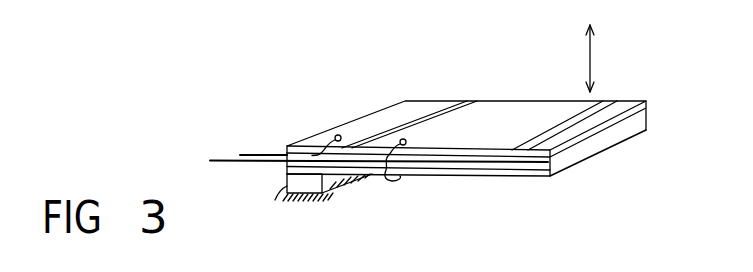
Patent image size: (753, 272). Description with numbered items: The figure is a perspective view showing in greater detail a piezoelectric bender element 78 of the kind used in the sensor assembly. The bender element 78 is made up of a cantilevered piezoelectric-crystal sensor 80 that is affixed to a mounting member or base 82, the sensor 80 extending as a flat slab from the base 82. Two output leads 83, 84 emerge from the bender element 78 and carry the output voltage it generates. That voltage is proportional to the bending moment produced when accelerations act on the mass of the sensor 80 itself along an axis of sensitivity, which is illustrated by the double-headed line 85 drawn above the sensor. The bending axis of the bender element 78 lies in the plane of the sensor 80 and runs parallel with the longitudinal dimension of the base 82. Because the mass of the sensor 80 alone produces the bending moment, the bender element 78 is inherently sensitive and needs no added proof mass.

The piezoelectric bender element 78 is at (514, 99).
The piezoelectric-crystal sensor 80 is at (500, 177).
The mounting member or base 82 is at (285, 186).
The output lead 83 is at (268, 154).
The output lead 84 is at (222, 162).
The axis of sensitivity 85 is at (592, 53).